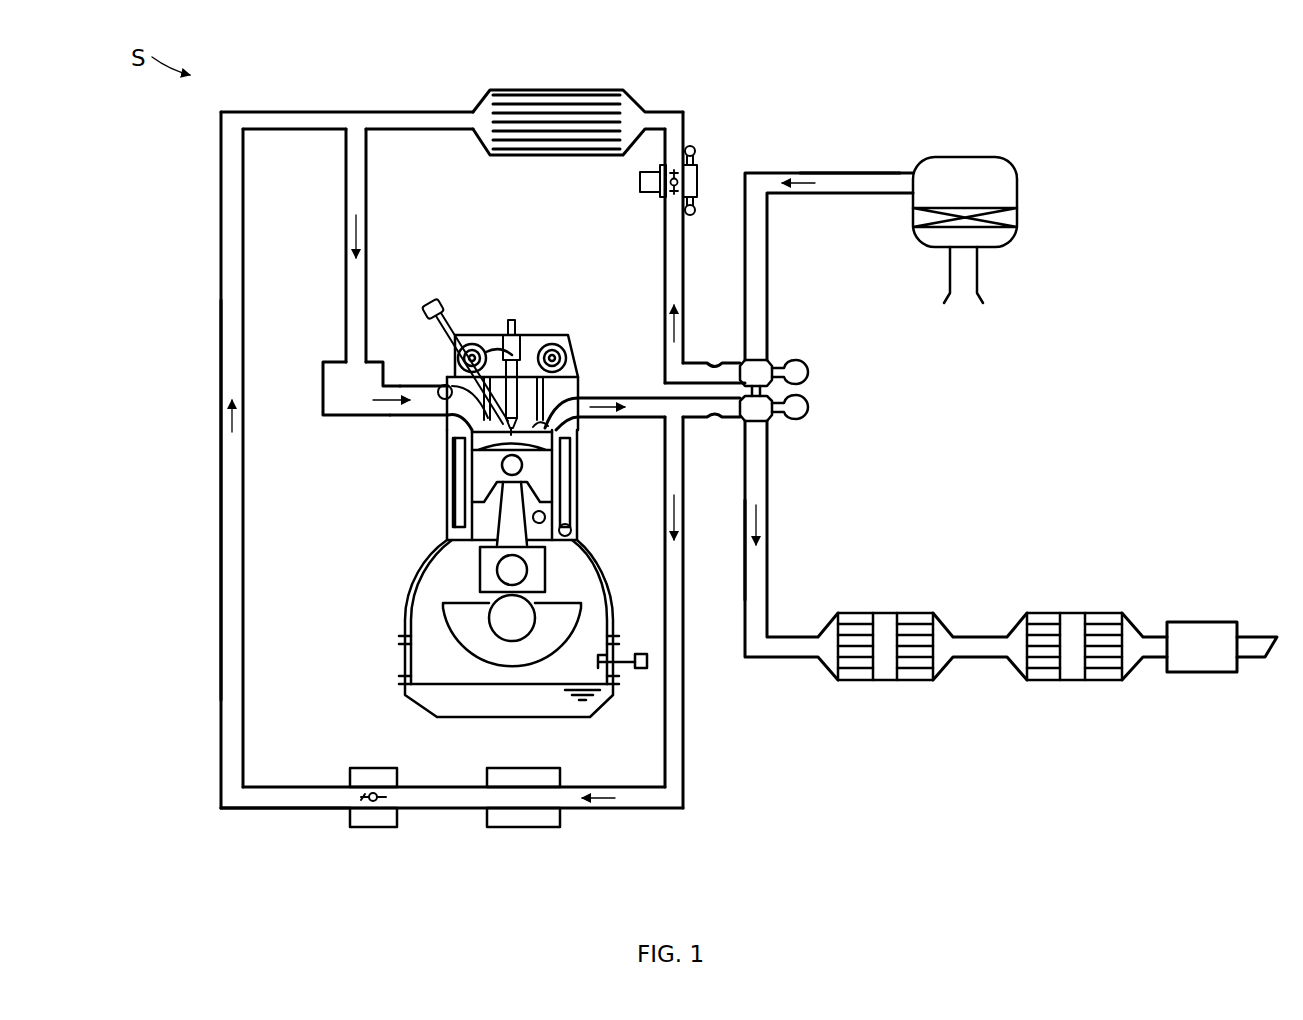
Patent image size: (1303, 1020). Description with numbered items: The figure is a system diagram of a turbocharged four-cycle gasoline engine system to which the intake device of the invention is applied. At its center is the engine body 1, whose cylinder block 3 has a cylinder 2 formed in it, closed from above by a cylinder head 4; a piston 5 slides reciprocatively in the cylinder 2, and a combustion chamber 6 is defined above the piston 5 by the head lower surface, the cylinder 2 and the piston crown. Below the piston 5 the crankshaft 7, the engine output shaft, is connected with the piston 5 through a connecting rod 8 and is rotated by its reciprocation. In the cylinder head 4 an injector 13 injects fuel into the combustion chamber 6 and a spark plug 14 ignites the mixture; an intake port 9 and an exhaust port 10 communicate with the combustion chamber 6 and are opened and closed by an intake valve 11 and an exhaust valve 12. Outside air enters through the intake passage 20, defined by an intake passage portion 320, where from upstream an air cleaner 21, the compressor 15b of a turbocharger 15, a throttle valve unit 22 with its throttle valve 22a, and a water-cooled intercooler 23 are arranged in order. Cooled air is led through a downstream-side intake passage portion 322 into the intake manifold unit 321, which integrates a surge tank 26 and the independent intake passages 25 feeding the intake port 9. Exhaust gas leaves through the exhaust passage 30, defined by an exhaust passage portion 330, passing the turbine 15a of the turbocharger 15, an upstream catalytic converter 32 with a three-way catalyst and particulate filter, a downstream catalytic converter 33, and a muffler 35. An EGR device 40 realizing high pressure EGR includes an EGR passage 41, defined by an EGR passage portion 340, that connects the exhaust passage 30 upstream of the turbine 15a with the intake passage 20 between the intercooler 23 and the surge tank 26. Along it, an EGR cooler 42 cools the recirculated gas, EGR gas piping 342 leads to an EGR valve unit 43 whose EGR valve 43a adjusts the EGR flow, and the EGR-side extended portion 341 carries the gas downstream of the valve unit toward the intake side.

The engine body 1 is at (368, 680).
The cylinder 2 is at (562, 520).
The cylinder block 3 is at (583, 490).
The cylinder head 4 is at (590, 370).
The piston 5 is at (470, 485).
The combustion chamber 6 is at (558, 462).
The crankshaft 7 is at (500, 640).
The connecting rod 8 is at (466, 520).
The intake port 9 is at (445, 385).
The exhaust port 10 is at (590, 400).
The intake valve 11 is at (450, 450).
The exhaust valve 12 is at (560, 425).
The injector 13 is at (512, 325).
The spark plug 14 is at (447, 316).
The turbocharger 15 is at (792, 392).
The turbine 15a is at (775, 412).
The compressor 15b is at (775, 370).
The intake passage 20 is at (853, 163).
The intake passage portion 320 is at (866, 126).
The air cleaner 21 is at (1005, 185).
The throttle valve unit 22 is at (700, 188).
The throttle valve 22a is at (677, 176).
The intercooler 23 is at (552, 105).
The independent intake passage 25 is at (395, 420).
The surge tank 26 is at (335, 420).
The intake manifold unit 321 is at (367, 457).
The downstream-side intake passage portion 322 is at (435, 110).
The exhaust passage 30 is at (760, 667).
The exhaust passage portion 330 is at (794, 624).
The upstream catalytic converter 32 is at (886, 612).
The downstream catalytic converter 33 is at (1076, 612).
The muffler 35 is at (1205, 621).
The EGR device 40 is at (452, 647).
The EGR passage 41 is at (225, 698).
The EGR passage portion 340 is at (200, 460).
The EGR-side extended portion 341 is at (257, 810).
The EGR gas piping 342 is at (447, 810).
The EGR cooler 42 is at (545, 770).
The EGR valve unit 43 is at (392, 770).
The EGR valve 43a is at (370, 802).